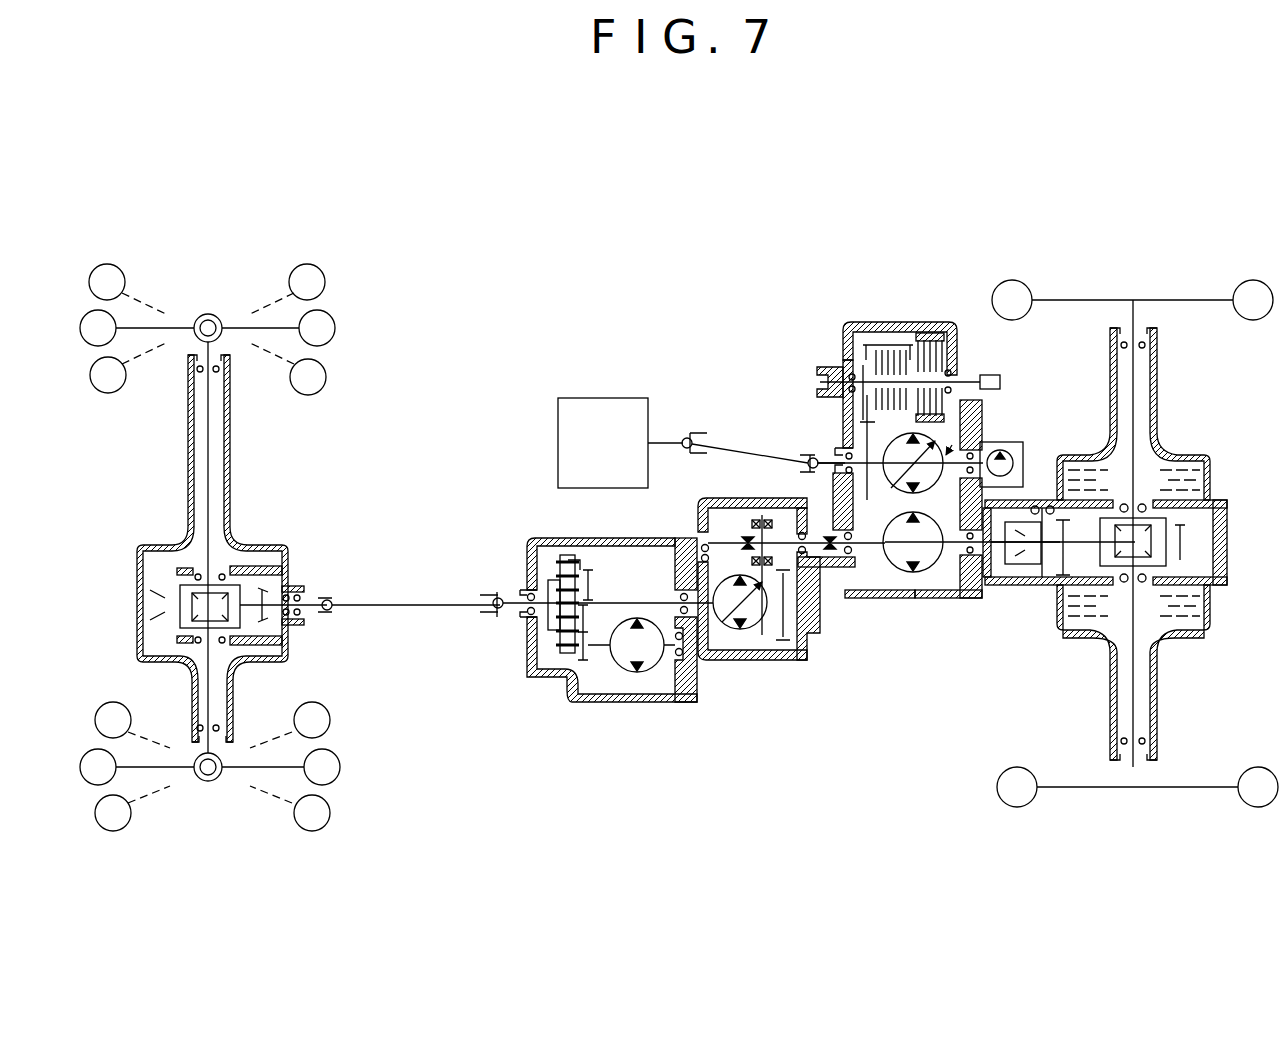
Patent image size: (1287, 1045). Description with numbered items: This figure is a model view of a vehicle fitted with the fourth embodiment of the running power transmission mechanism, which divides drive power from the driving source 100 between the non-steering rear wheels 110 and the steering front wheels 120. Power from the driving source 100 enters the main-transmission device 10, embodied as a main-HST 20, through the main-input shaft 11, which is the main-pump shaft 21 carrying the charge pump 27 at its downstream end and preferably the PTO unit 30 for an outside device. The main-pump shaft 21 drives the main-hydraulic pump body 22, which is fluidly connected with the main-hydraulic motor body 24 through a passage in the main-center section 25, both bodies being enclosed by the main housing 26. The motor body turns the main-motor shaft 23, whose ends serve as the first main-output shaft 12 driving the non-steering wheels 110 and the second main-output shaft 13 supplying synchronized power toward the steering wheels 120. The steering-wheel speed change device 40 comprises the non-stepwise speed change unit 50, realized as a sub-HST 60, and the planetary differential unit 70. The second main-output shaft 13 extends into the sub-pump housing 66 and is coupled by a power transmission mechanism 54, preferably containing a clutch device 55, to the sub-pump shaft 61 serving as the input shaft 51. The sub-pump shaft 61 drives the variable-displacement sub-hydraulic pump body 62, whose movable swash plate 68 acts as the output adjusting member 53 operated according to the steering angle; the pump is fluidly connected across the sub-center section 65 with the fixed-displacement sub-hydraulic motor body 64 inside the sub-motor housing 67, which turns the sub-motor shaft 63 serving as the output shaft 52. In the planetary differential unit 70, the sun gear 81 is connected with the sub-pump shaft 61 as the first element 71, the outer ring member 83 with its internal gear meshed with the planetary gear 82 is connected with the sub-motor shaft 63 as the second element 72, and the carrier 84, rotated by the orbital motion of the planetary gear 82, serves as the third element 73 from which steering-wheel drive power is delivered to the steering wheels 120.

The main-transmission device 10 is at (808, 198).
The main-HST 20 is at (909, 298).
The main-input shaft 11 is at (801, 419).
The main-pump shaft 21 is at (832, 478).
The first main-output shaft 12 is at (971, 583).
The main-motor shaft 23 is at (948, 598).
The second main-output shaft 13 is at (858, 598).
The main-hydraulic pump body 22 is at (983, 420).
The main-hydraulic motor body 24 is at (927, 576).
The main-center section 25 is at (980, 598).
The main housing 26 is at (846, 599).
The charge pump 27 is at (1024, 452).
The PTO unit 30 is at (883, 340).
The steering-wheel speed change device 40 is at (677, 772).
The non-stepwise speed change unit 50 is at (724, 636).
The sub-HST 60 is at (689, 720).
The input shaft 51 is at (796, 616).
The sub-pump shaft 61 is at (797, 686).
The output shaft 52 is at (682, 662).
The sub-motor shaft 63 is at (590, 702).
The output adjusting member 53 is at (762, 631).
The movable swash plate 68 is at (724, 636).
The power transmission mechanism 54 is at (792, 552).
The clutch device 55 is at (768, 514).
The sub-hydraulic pump body 62 is at (757, 658).
The sub-hydraulic motor body 64 is at (652, 683).
The sub-center section 65 is at (692, 696).
The sub-pump housing 66 is at (706, 499).
The sub-motor housing 67 is at (592, 537).
The planetary differential unit 70 is at (540, 525).
The first element 71 is at (557, 646).
The sun gear 81 is at (533, 652).
The second element 72 is at (529, 675).
The outer ring member 83 is at (556, 678).
The third element 73 is at (489, 604).
The carrier 84 is at (556, 578).
The planetary gear 82 is at (560, 568).
The driving source 100 is at (600, 413).
The steered wheels 110 is at (1252, 283).
The steering wheels 120 is at (325, 318).